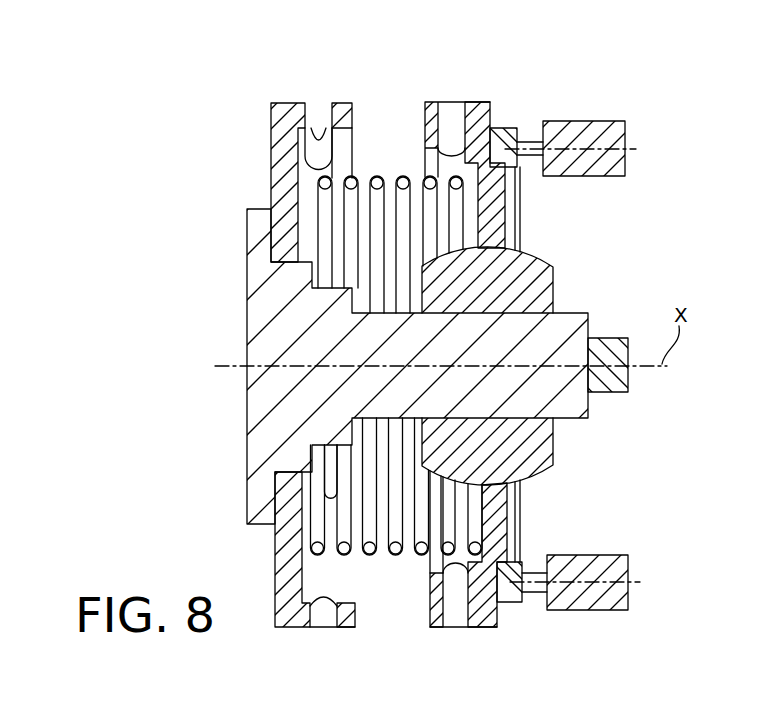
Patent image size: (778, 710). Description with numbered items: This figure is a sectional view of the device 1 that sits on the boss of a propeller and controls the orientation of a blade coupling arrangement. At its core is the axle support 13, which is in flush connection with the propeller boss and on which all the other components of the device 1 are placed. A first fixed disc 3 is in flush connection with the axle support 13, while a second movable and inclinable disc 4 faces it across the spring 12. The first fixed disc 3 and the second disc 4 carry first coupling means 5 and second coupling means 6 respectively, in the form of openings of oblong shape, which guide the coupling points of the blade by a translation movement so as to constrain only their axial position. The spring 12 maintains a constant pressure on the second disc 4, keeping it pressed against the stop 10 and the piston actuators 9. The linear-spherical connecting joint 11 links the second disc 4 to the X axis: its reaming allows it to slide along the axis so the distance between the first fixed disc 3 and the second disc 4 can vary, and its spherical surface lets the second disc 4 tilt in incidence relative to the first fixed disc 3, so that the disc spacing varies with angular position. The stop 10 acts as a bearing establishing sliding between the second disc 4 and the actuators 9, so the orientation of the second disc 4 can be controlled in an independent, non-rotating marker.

The device 1 is at (214, 210).
The first fixed disc 3 is at (272, 127).
The second movable and inclinable disc 4 is at (478, 107).
The first coupling means 5 is at (317, 112).
The second coupling means 6 is at (453, 620).
The piston actuators 9 is at (577, 120).
The stop for actuators 10 is at (503, 128).
The linear-spherical connecting joint 11 is at (540, 253).
The spring 12 is at (405, 174).
The axle support 13 is at (268, 313).